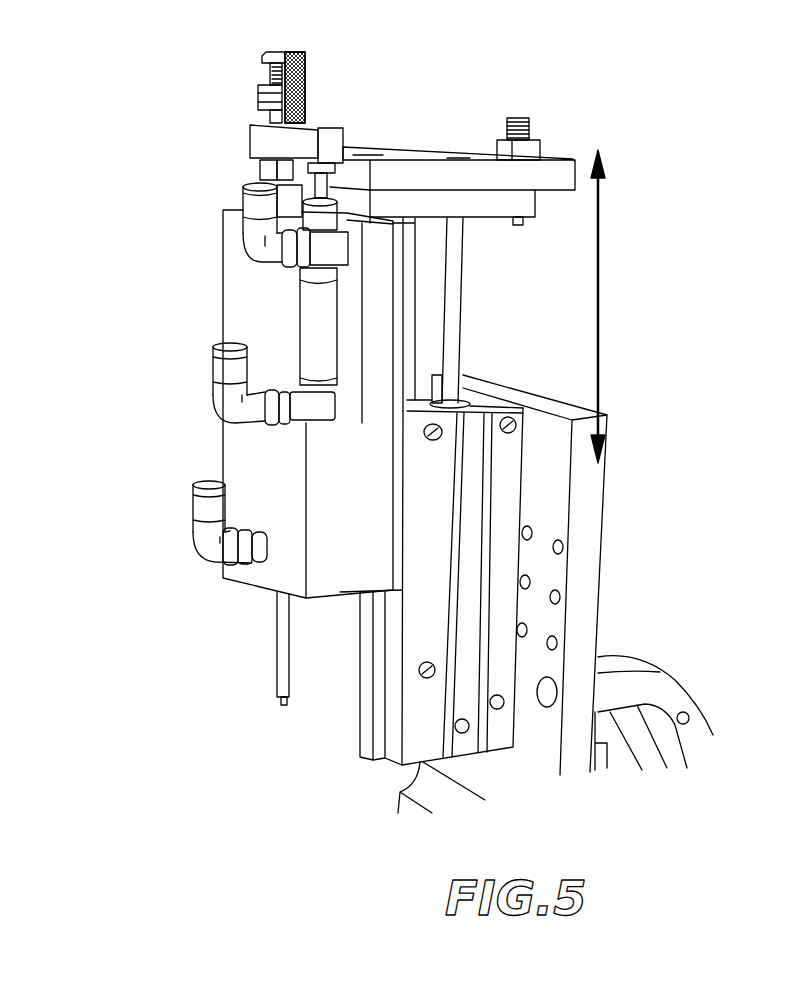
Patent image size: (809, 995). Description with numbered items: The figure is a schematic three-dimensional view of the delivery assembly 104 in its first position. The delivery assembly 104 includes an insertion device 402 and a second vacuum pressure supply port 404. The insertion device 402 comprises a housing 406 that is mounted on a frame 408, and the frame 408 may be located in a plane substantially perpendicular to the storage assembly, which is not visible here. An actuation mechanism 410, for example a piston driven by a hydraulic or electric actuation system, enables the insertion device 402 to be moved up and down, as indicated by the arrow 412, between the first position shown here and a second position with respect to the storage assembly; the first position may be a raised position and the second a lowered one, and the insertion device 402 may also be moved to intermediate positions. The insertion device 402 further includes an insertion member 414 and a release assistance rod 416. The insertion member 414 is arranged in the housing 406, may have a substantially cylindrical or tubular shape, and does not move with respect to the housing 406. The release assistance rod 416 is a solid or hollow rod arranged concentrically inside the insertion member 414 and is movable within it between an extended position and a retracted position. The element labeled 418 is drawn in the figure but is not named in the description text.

The delivery assembly 104 is at (727, 164).
The insertion device 402 is at (108, 760).
The second vacuum pressure supply port 404 is at (212, 565).
The housing 406 is at (245, 456).
The frame 408 is at (585, 572).
The actuation mechanism 410 is at (455, 303).
The arrow 412 is at (600, 296).
The insertion member 414 is at (282, 637).
The release assistance rod 416 is at (283, 704).
The vertical cylinder fitting 418 is at (318, 318).